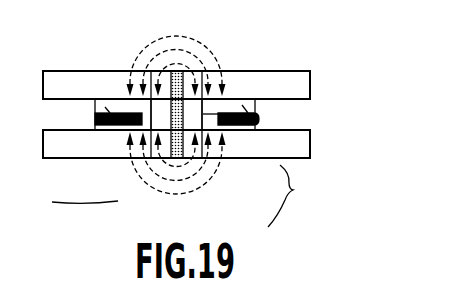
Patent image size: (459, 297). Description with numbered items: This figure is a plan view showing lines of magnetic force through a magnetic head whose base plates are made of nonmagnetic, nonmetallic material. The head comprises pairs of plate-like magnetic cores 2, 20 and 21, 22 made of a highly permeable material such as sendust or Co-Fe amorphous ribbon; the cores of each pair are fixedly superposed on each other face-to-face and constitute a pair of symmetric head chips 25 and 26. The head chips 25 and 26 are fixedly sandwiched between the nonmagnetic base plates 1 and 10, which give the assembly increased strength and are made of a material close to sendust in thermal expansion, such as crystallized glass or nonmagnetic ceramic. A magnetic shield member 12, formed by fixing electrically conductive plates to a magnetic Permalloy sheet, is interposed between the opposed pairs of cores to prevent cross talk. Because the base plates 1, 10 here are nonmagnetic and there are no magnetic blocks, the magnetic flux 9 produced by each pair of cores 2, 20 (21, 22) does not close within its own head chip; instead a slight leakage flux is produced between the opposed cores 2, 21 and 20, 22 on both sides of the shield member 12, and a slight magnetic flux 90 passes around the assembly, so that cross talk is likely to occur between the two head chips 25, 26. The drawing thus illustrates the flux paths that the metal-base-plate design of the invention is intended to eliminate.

The nonmagnetic base plate 1 is at (305, 83).
The nonmagnetic base plate 10 is at (298, 150).
The magnetic shield member 12 is at (172, 73).
The plate-like magnetic core 2 is at (236, 128).
The plate-like magnetic core 20 is at (233, 129).
The plate-like magnetic core 21 is at (97, 131).
The plate-like magnetic core 22 is at (115, 128).
The head chip 25 is at (292, 196).
The head chip 26 is at (85, 217).
The magnetic flux 9 is at (189, 192).
The slight magnetic flux 90 is at (212, 51).